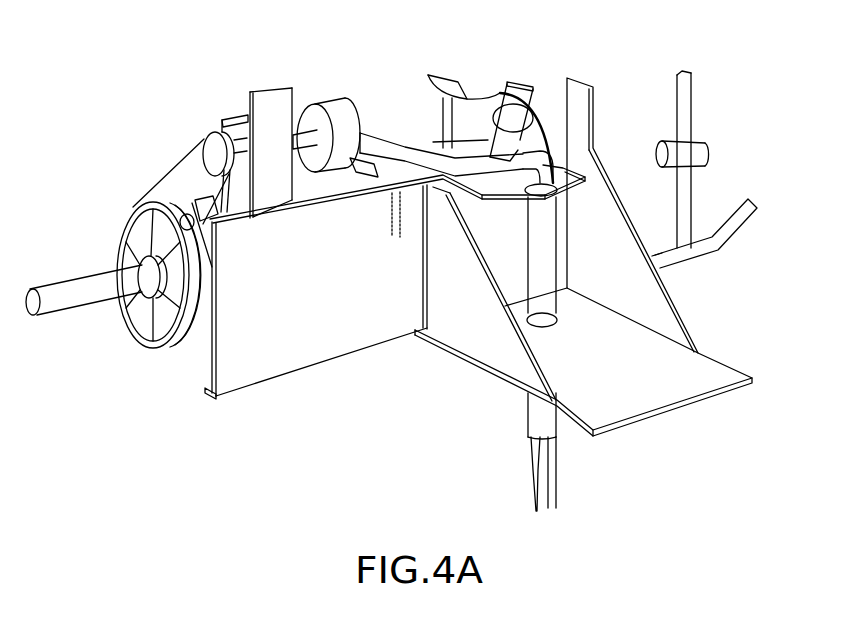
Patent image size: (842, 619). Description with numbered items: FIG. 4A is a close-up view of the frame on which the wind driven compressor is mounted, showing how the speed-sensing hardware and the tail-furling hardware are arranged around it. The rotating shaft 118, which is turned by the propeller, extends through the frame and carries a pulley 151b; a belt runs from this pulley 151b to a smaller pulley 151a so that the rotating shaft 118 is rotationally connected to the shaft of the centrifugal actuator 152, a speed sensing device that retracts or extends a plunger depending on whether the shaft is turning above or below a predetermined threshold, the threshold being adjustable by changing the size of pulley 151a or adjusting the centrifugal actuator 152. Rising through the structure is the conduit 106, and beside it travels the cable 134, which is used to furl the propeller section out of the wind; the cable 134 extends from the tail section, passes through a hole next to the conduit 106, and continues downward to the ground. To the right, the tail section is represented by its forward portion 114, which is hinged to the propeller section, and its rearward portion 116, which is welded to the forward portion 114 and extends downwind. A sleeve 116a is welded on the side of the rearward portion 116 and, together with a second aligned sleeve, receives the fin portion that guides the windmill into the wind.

The conduit 106 is at (418, 152).
The forward portion 114 is at (673, 262).
The rearward portion 116 is at (743, 221).
The sleeve 116a is at (700, 150).
The rotating shaft 118 is at (68, 312).
The cable 134 is at (480, 98).
The pulley 151a is at (212, 133).
The pulley 151b is at (163, 348).
The centrifugal actuator 152 is at (334, 105).